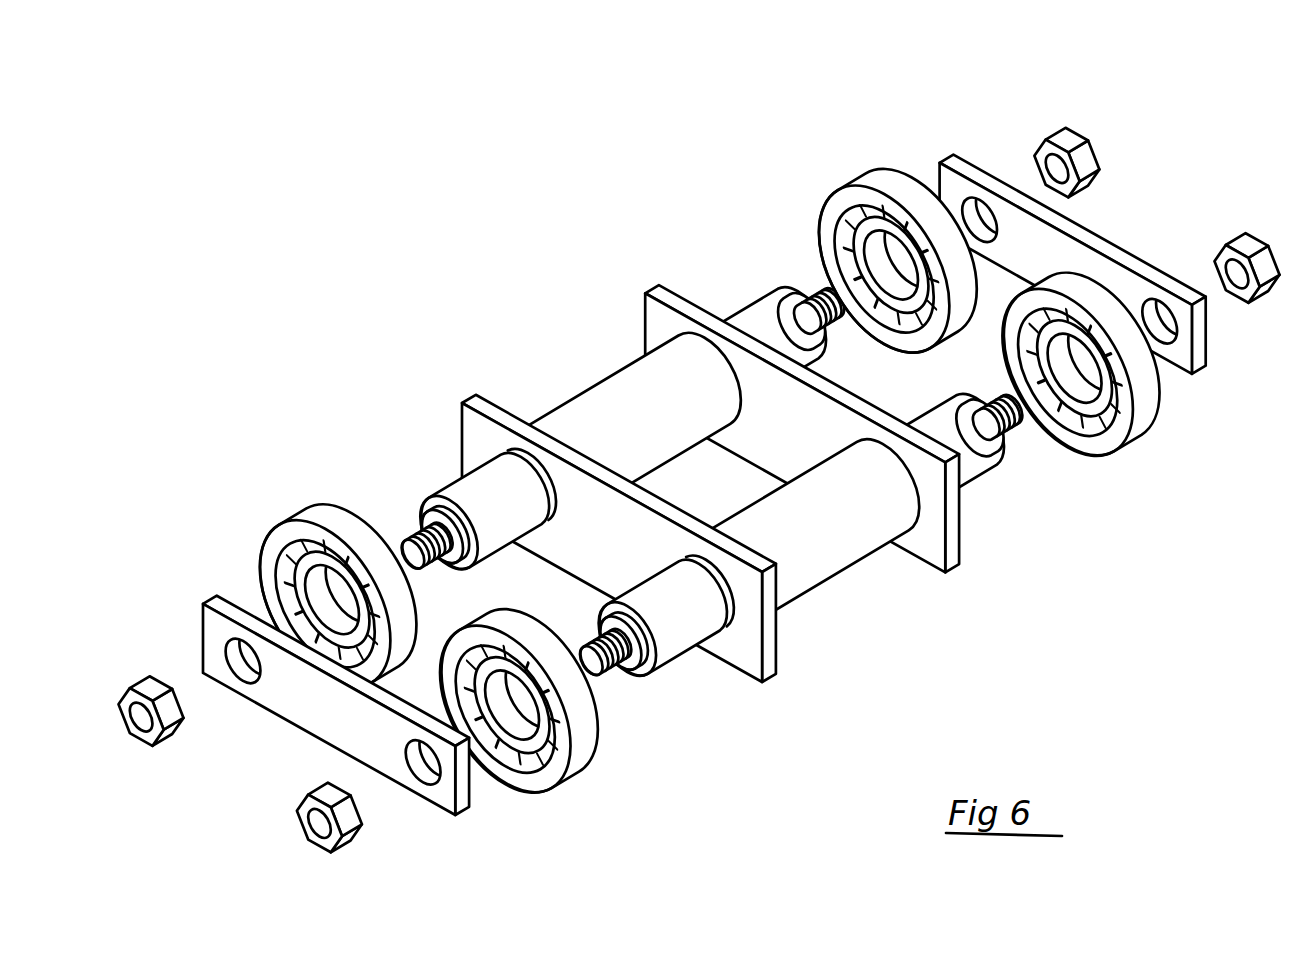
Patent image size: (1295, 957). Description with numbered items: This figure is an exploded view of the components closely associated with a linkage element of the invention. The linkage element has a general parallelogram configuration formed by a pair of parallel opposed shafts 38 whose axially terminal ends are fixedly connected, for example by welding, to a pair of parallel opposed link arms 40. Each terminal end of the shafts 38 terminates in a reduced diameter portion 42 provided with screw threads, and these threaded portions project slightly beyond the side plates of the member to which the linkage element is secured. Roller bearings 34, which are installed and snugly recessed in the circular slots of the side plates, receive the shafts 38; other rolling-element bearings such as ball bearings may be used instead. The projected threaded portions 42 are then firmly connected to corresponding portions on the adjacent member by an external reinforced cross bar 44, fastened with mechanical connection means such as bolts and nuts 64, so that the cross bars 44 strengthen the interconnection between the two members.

The roller bearing 34 is at (313, 543).
The shaft 38 is at (605, 408).
The link arm 40 is at (725, 453).
The reduced diameter portion 42 is at (661, 453).
The reinforced cross bar 44 is at (704, 434).
The nut 64 is at (699, 451).